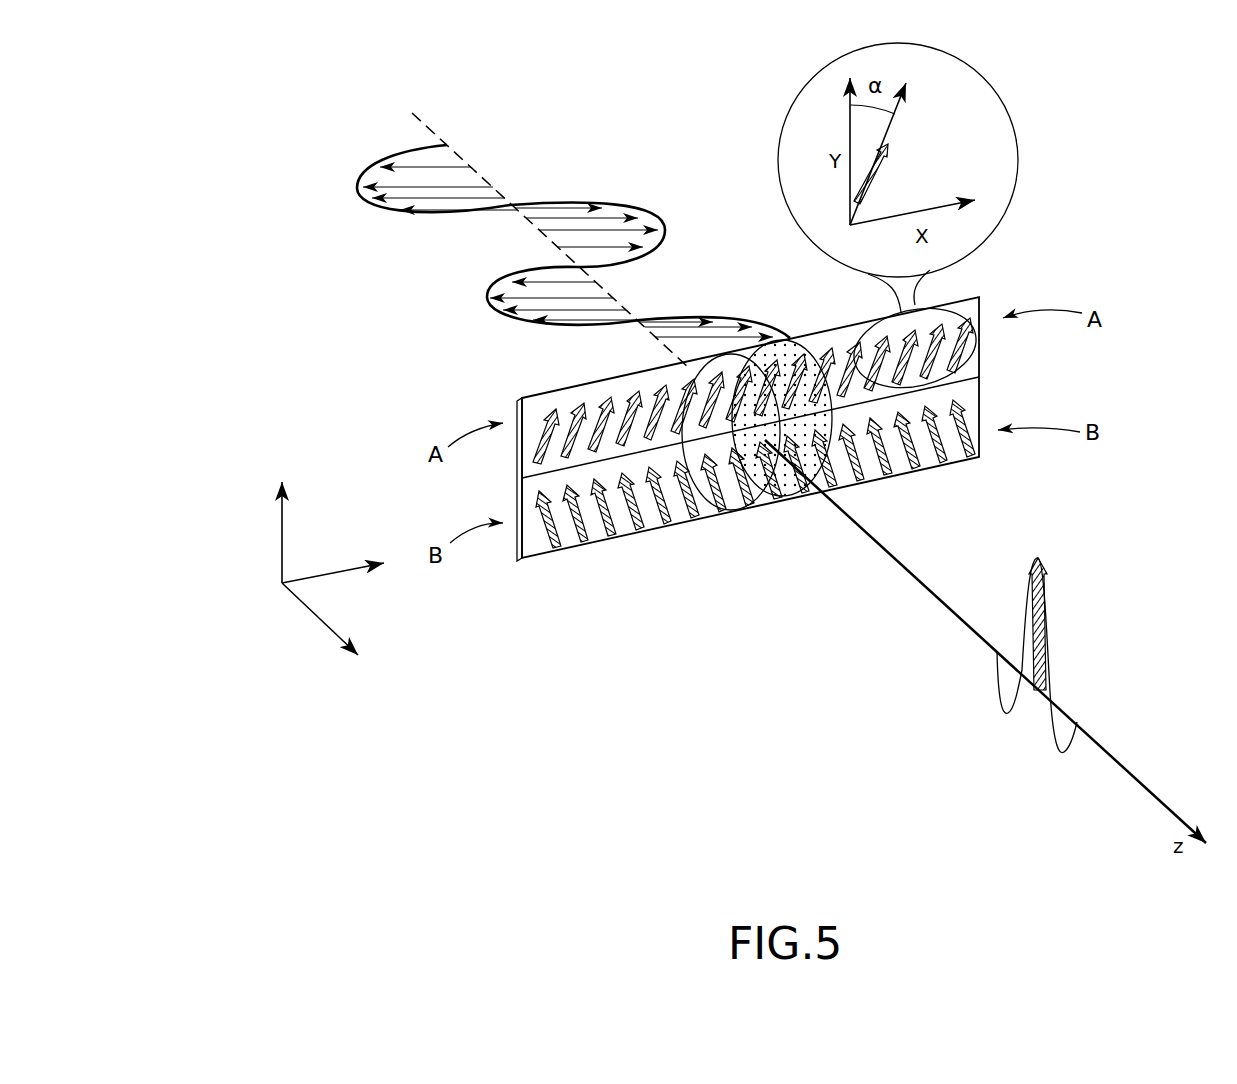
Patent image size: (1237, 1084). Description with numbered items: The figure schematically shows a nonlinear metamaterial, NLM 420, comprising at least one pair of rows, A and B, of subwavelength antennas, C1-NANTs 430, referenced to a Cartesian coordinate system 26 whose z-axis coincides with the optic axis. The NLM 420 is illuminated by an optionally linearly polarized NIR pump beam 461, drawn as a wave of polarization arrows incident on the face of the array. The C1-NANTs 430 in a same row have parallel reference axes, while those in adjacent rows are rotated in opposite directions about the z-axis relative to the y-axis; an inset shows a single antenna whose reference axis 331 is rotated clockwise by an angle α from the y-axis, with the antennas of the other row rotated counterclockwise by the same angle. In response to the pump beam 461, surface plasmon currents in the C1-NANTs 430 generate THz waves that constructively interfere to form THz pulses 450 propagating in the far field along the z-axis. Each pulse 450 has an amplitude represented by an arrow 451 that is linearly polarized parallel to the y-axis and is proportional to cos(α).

The Cartesian coordinate system 26 is at (282, 583).
The reference axis 331 is at (887, 137).
The NLM 420 is at (943, 297).
The C1-NANTs 430 is at (967, 332).
The THz pulses 450 is at (1096, 655).
The arrow representing amplitude 451 is at (1045, 590).
The NIR pump beam 461 is at (448, 253).